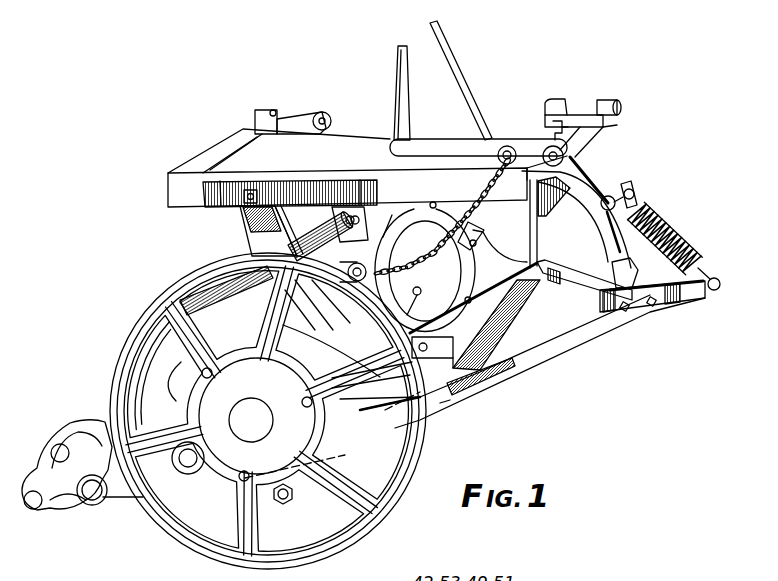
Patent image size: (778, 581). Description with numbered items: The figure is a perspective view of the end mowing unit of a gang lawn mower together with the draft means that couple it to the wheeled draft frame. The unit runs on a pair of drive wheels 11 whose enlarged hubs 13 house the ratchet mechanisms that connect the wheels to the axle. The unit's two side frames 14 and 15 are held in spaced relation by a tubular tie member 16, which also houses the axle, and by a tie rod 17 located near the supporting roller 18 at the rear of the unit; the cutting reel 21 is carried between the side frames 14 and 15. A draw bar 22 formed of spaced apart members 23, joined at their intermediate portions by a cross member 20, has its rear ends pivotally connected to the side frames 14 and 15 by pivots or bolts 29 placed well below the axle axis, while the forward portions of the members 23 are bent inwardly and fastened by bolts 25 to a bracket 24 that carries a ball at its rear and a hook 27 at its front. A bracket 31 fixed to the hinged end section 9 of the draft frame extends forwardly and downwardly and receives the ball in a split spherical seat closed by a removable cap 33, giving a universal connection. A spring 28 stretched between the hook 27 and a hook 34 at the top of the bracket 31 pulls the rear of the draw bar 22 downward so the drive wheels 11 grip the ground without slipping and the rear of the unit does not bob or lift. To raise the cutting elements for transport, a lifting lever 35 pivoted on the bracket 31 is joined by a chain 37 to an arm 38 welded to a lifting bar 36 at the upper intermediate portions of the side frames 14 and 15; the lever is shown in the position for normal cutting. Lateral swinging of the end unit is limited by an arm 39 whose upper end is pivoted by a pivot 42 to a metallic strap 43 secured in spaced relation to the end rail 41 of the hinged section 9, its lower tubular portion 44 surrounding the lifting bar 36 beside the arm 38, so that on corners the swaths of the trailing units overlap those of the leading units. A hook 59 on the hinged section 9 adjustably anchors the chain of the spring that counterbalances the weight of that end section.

The hinged end section 9 is at (210, 160).
The drive wheels 11 is at (499, 265).
The enlarged hubs 13 is at (233, 450).
The side frame 14 is at (382, 218).
The side frame 15 is at (160, 375).
The tubular tie member 16 is at (333, 343).
The tie rod 17 is at (92, 505).
The supporting roller 18 is at (65, 508).
The cross member 20 is at (510, 316).
The reel 21 is at (357, 363).
The draw bar 22 is at (505, 394).
The spaced apart members 23 is at (578, 283).
The bracket 24 is at (680, 299).
The bolts 25 is at (651, 307).
The hook 27 is at (719, 280).
The spring 28 is at (681, 233).
The pivots or bolts 29 is at (281, 506).
The bracket 31 is at (594, 190).
The removable cap 33 is at (632, 272).
The hooks 34 is at (634, 193).
The lifting lever 35 is at (483, 148).
The lifting bar 36 is at (222, 300).
The chain 37 is at (476, 227).
The arm 38 is at (333, 250).
The arm 39 is at (244, 229).
The end rail 41 is at (390, 178).
The pivot 42 is at (253, 190).
The metallic strap 43 is at (303, 183).
The tubular portion 44 is at (268, 244).
The hook 59 is at (552, 128).